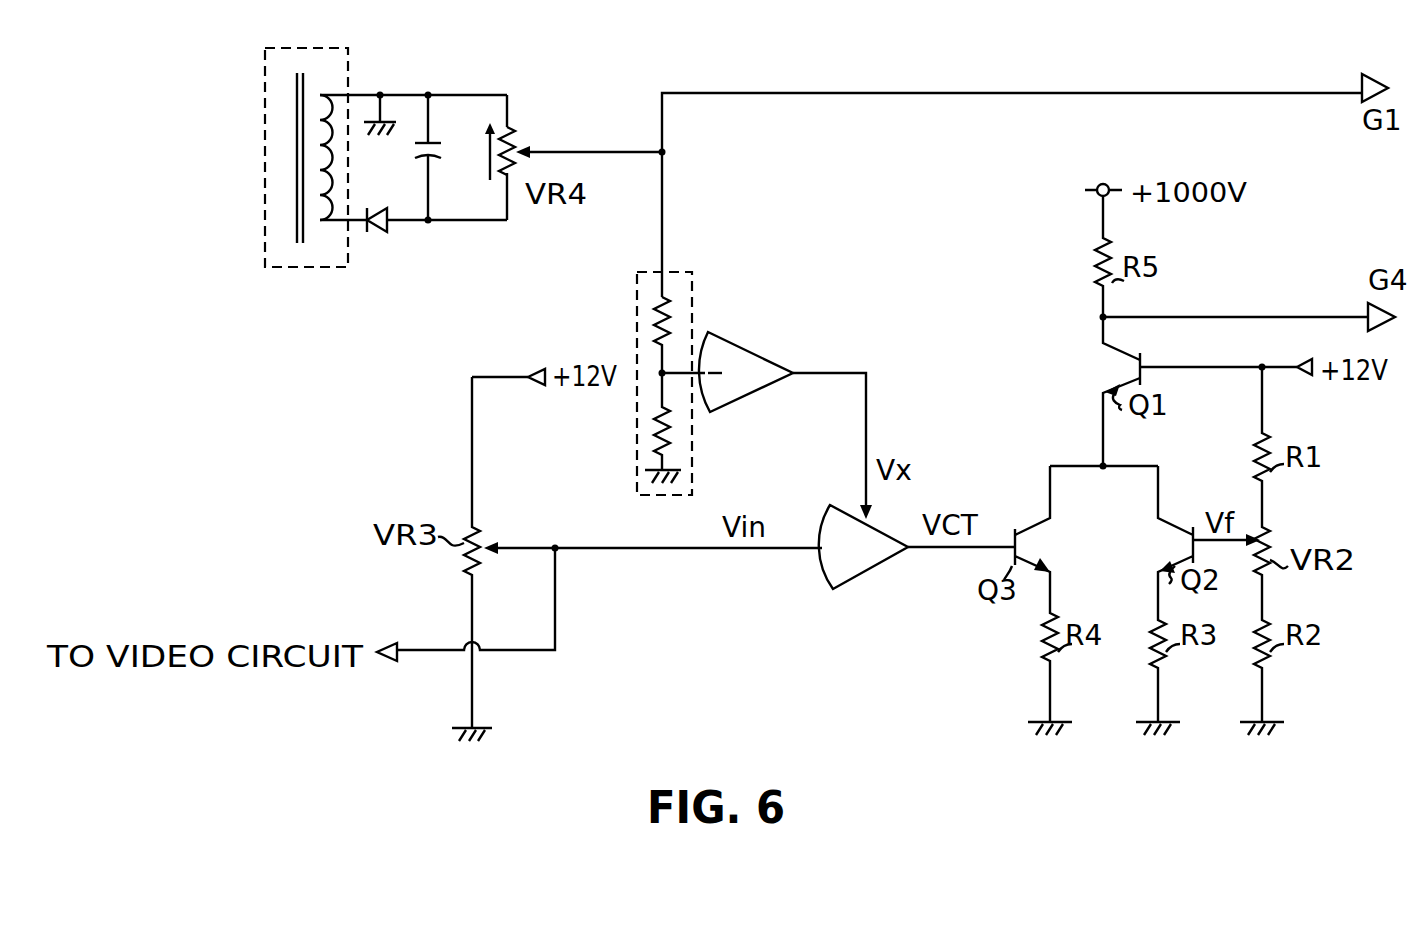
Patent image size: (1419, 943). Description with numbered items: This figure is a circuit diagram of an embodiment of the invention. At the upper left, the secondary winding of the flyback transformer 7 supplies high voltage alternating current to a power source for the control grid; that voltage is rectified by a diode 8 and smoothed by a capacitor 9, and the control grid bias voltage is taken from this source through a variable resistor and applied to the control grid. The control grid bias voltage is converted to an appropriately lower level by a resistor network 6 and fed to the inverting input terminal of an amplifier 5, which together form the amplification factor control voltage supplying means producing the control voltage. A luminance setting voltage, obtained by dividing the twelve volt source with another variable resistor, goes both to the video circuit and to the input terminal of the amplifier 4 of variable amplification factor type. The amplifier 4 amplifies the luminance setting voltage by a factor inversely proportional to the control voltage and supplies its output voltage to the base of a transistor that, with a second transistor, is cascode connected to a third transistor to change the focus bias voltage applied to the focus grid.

The amplifier of variable amplification factor type 4 is at (850, 581).
The amplifier 5 is at (745, 349).
The resistor network 6 is at (690, 272).
The flyback transformer 7 is at (322, 268).
The diode 8 is at (372, 233).
The capacitor 9 is at (439, 157).